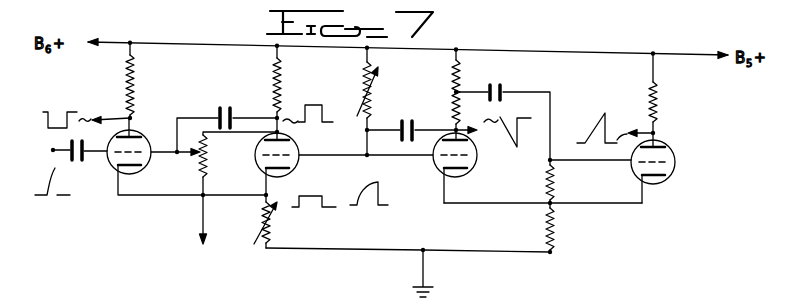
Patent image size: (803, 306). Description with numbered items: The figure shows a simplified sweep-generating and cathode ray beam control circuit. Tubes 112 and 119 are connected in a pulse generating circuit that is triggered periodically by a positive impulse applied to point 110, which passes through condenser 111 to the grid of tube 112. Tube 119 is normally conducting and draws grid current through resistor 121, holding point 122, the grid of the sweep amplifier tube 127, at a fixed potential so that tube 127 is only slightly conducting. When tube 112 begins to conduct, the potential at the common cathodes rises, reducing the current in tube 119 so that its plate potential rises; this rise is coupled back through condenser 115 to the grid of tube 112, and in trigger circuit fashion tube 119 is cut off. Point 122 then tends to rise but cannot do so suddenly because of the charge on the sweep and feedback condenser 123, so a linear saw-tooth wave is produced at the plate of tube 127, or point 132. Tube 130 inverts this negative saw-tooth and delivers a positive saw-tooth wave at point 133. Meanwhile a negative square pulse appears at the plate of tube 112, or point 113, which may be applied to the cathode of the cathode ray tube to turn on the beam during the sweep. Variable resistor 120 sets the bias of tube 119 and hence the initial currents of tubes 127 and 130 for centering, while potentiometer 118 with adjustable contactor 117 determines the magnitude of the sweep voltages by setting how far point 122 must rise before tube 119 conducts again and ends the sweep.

The point 110 is at (53, 150).
The condenser 111 is at (87, 157).
The tube 112 is at (119, 172).
The point 113 is at (143, 86).
The condenser 115 is at (228, 108).
The adjustable contactor 117 is at (194, 154).
The potentiometer 118 is at (206, 170).
The tube 119 is at (255, 149).
The variable resistor 120 is at (265, 216).
The resistor 121 is at (364, 102).
The point 122 is at (364, 154).
The condenser 123 is at (417, 122).
The tube 127 is at (474, 167).
The tube 130 is at (678, 181).
The point 132 is at (493, 134).
The point 133 is at (650, 131).